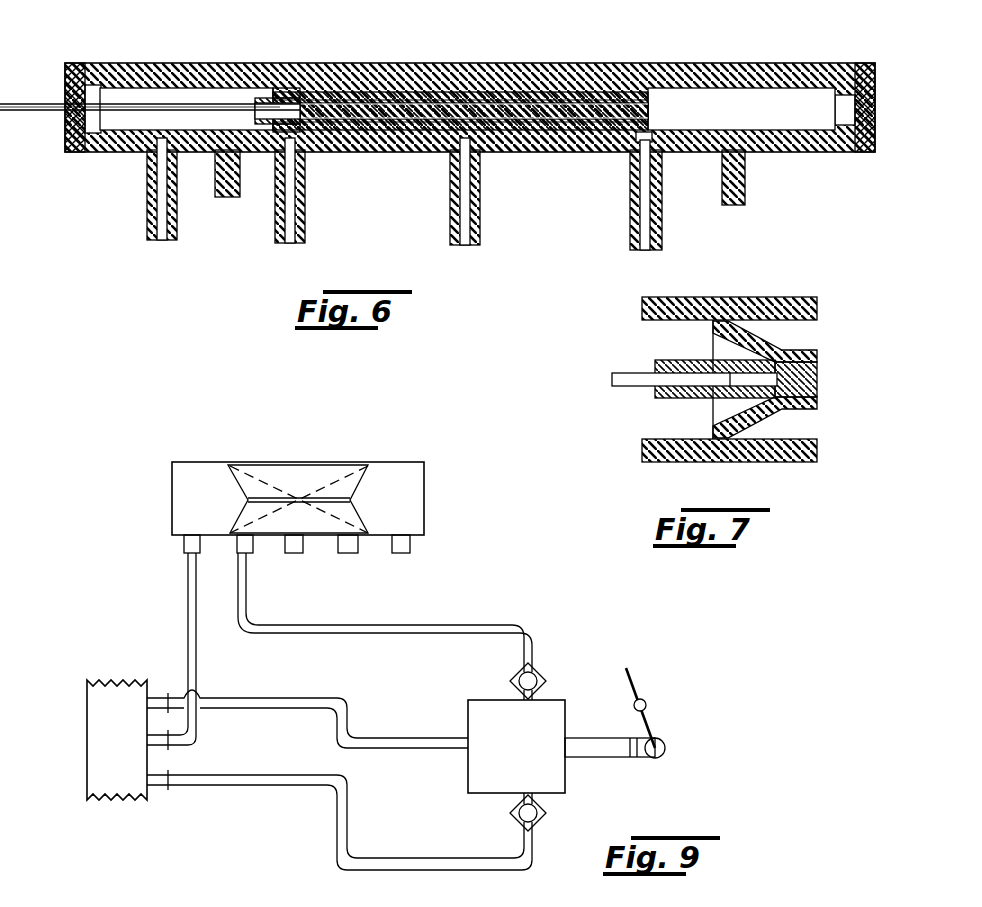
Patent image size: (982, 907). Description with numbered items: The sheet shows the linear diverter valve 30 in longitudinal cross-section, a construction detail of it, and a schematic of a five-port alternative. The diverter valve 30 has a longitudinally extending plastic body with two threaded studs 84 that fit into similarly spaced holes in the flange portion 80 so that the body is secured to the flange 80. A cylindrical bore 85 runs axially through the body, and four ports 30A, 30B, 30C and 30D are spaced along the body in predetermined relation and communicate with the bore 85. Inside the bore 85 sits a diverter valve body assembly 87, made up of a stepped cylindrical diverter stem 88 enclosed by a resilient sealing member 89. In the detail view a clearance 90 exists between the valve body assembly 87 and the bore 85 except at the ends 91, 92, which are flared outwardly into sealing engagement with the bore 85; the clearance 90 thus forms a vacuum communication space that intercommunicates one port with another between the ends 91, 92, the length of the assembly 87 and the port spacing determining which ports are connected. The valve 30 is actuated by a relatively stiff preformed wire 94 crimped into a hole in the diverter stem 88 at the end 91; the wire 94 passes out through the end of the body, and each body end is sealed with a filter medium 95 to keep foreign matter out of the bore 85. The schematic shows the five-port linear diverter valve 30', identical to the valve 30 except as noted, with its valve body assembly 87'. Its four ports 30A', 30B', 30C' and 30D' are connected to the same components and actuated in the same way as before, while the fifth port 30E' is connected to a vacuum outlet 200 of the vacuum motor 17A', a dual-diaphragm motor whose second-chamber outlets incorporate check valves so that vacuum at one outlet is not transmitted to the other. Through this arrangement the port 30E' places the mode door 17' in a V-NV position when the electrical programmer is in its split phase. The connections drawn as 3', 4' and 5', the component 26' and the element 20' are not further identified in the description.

In FIG. 6, the linear diverter valve 30 is at (437, 140).
In FIG. 6, the flange portion 80 is at (647, 77).
In FIG. 6, the threaded studs 84 is at (233, 198).
In FIG. 6, the cylindrical bore 85 is at (733, 98).
In FIG. 6, the diverter valve body assembly 87 is at (474, 68).
In FIG. 6, the diverter stem 88 is at (540, 110).
In FIG. 6, the resilient sealing member 89 is at (335, 77).
In FIG. 7, the resilient sealing member 89 is at (818, 382).
In FIG. 6, the clearance 90 is at (423, 155).
In FIG. 7, the clearance 90 is at (805, 328).
In FIG. 6, the end of valve body assembly 91 is at (283, 92).
In FIG. 7, the end of valve body assembly 91 is at (712, 327).
In FIG. 6, the end of valve body assembly 92 is at (628, 155).
In FIG. 6, the preformed wire 94 is at (33, 103).
In FIG. 7, the preformed wire 94 is at (623, 395).
In FIG. 6, the filter medium 95 is at (77, 63).
In FIG. 6, the port 30A is at (676, 196).
In FIG. 6, the port 30B is at (497, 195).
In FIG. 6, the port 30C is at (322, 193).
In FIG. 6, the port 30D is at (130, 200).
In FIG. 9, the five-port linear diverter valve 30' is at (331, 494).
In FIG. 9, the diverter valve body assembly 87' is at (298, 475).
In FIG. 9, the port 30A' is at (164, 554).
In FIG. 9, the port 30B' is at (298, 562).
In FIG. 9, the port 30C' is at (352, 562).
In FIG. 9, the port 30D' is at (409, 562).
In FIG. 9, the fifth port 30E' is at (278, 575).
In FIG. 9, the line 3' is at (307, 697).
In FIG. 9, the line 4' is at (339, 820).
In FIG. 9, the line 5' is at (180, 659).
In FIG. 9, the master cylinder 26' is at (127, 761).
In FIG. 9, the vacuum motor 17A' is at (507, 723).
In FIG. 9, the mode door 17' is at (627, 713).
In FIG. 9, the vacuum outlet 200 is at (543, 685).
In FIG. 9, the check valve 20' is at (550, 812).